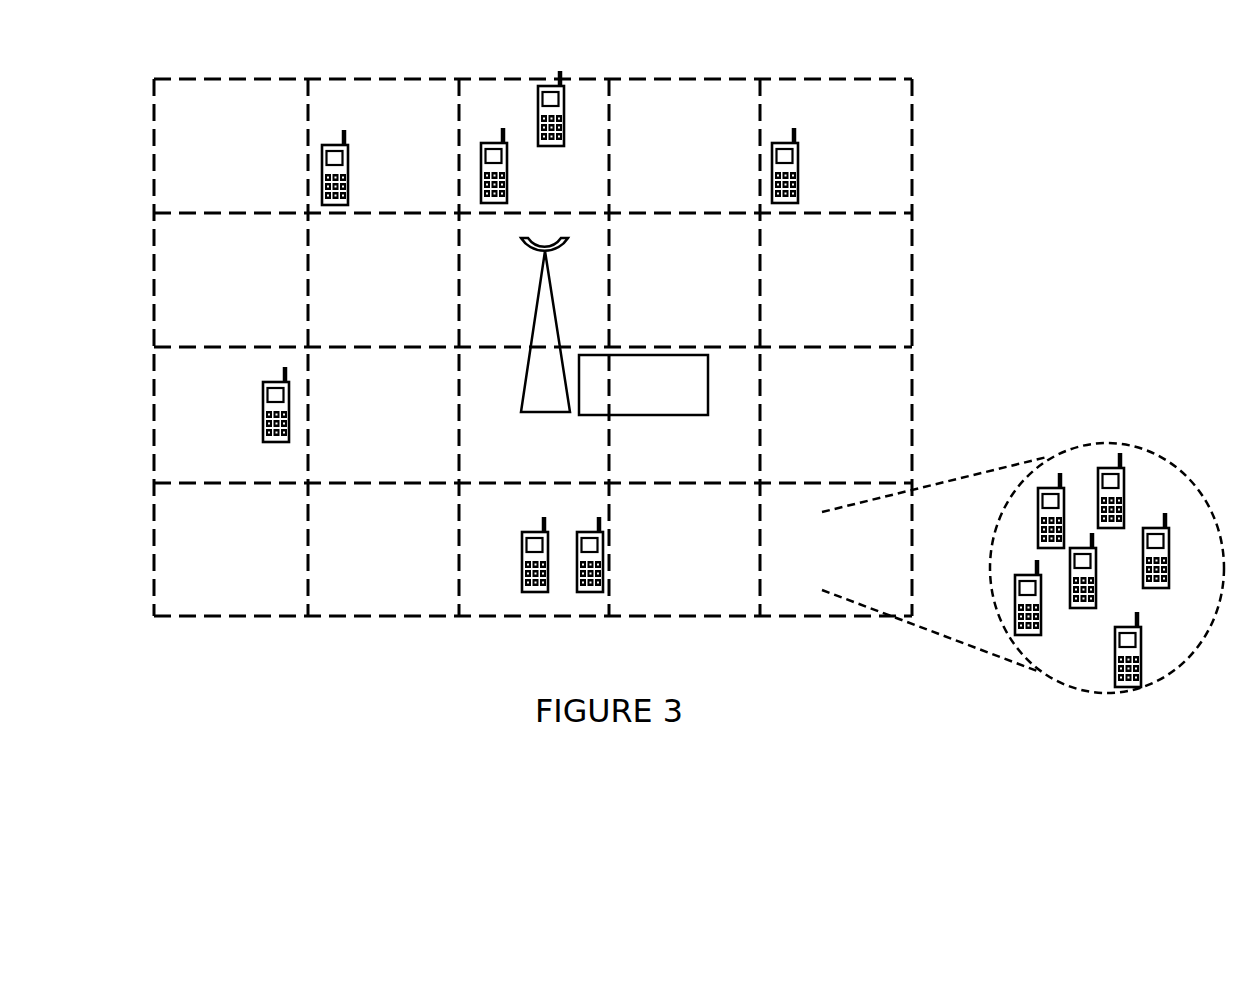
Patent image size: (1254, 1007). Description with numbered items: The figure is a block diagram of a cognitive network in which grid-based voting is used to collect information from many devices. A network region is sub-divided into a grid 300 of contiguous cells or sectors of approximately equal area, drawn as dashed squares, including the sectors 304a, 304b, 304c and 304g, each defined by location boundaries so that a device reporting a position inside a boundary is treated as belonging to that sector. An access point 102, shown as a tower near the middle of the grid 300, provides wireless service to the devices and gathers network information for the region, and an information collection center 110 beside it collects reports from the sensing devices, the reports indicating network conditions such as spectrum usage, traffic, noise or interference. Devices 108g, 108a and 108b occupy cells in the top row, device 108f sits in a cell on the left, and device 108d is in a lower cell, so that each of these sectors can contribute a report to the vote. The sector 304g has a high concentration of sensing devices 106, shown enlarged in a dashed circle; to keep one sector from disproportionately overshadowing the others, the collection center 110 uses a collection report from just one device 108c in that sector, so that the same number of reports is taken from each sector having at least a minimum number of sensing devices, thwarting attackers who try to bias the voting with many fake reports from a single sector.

The grid 300 is at (912, 243).
The sector 304a is at (212, 78).
The sector 304b is at (370, 78).
The sector 304c is at (488, 78).
The sector 304g is at (830, 618).
The access point 102 is at (552, 303).
The information collection center 110 is at (640, 352).
The sensing devices 106 is at (1026, 568).
The device 108a is at (564, 112).
The device 108b is at (798, 168).
The device 108c is at (1169, 557).
The device 108d is at (520, 555).
The device 108f is at (262, 405).
The device 108g is at (348, 158).